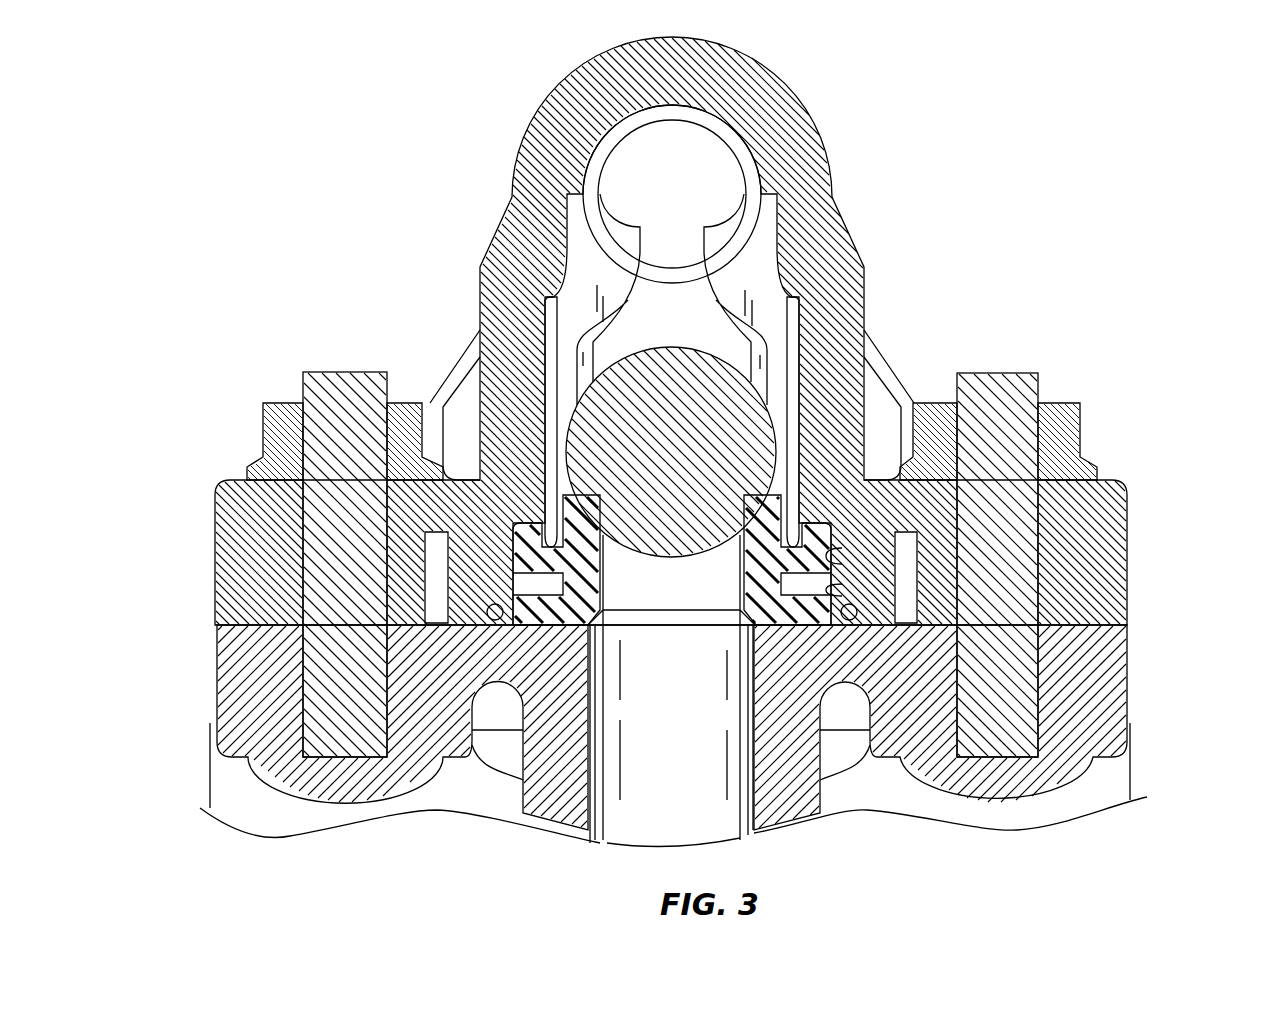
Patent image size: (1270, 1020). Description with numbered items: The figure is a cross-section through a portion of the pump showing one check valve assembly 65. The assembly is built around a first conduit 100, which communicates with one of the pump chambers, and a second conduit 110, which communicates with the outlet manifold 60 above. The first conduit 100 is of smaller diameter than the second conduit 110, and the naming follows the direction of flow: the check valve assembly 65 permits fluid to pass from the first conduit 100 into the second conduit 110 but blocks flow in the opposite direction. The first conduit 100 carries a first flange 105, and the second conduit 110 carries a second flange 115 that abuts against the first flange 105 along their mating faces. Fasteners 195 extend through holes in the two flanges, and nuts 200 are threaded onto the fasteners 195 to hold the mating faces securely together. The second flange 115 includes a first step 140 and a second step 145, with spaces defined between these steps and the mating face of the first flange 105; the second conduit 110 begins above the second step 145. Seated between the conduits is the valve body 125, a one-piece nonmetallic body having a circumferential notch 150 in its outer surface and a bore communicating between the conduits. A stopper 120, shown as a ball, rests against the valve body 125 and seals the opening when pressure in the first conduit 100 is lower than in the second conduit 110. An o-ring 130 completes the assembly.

The outlet manifold 60 is at (675, 118).
The check valve assembly 65 is at (692, 467).
The first conduit 100 is at (622, 822).
The first flange 105 is at (1100, 706).
The second conduit 110 is at (678, 303).
The second flange 115 is at (1085, 555).
The stopper 120 is at (735, 418).
The valve body 125 is at (842, 548).
The o-ring 130 is at (848, 592).
The first step 140 is at (487, 610).
The second step 145 is at (453, 480).
The circumferential notch 150 is at (836, 560).
The fasteners 195 is at (1042, 663).
The nuts 200 is at (1062, 402).